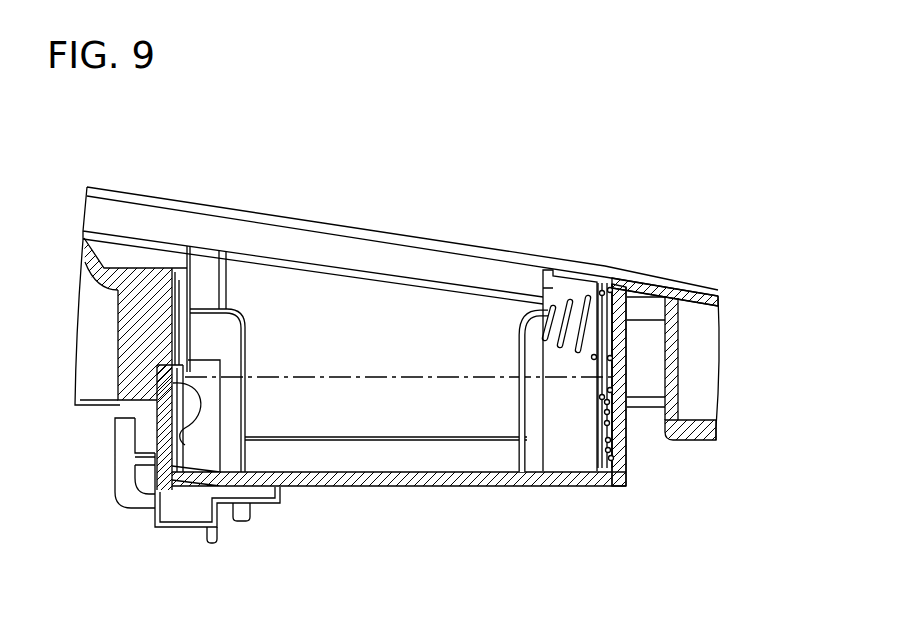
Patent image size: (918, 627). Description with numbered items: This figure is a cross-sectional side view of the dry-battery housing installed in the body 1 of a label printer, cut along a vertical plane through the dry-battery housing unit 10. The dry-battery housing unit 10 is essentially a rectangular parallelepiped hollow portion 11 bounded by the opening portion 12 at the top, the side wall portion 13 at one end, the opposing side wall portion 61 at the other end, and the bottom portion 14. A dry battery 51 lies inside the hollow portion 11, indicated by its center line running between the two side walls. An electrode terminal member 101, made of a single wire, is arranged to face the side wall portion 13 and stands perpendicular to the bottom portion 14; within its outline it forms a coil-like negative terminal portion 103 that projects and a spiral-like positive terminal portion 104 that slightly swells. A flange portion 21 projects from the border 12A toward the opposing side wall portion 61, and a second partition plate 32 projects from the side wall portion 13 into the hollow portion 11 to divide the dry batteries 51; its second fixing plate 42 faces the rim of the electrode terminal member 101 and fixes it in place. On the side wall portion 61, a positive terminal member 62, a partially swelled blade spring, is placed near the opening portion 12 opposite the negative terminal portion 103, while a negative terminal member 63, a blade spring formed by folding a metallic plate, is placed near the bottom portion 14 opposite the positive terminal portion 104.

The body 1 is at (68, 197).
The dry-battery housing unit 10 is at (625, 156).
The hollow portion 11 is at (364, 341).
The opening portion 12 is at (282, 310).
The border 12A is at (612, 268).
The side wall portion 13 is at (612, 301).
The bottom portion 14 is at (412, 470).
The flange portion 21 is at (586, 268).
The second partition plate 32 is at (553, 447).
The second fixing plate 42 is at (598, 400).
The dry battery 51 is at (438, 377).
The side wall portion 61 is at (174, 352).
The positive terminal member 62 is at (174, 302).
The negative terminal member 63 is at (165, 452).
The electrode terminal member 101 is at (606, 373).
The negative terminal portion 103 is at (527, 327).
The positive terminal portion 104 is at (604, 397).